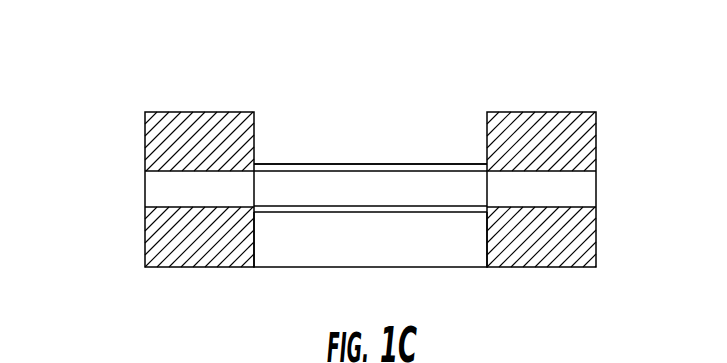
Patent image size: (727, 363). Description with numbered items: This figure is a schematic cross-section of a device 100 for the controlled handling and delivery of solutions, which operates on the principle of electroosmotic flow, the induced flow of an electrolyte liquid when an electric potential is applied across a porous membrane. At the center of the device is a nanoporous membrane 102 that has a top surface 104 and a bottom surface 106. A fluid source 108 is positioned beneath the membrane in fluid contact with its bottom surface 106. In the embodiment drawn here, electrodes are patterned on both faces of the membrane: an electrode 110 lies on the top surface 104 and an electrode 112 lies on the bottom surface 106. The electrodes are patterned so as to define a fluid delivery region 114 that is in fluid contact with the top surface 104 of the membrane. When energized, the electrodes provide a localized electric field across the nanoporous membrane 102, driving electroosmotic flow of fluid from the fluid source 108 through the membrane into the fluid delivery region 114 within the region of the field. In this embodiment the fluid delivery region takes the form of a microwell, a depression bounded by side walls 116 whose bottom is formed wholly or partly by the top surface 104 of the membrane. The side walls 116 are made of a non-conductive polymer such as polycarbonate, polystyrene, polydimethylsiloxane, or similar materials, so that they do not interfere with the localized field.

The device 100 is at (162, 70).
The nanoporous membrane 102 is at (583, 188).
The top surface 104 is at (177, 170).
The bottom surface 106 is at (188, 207).
The fluid source 108 is at (337, 248).
The electrode 110 is at (410, 164).
The electrode 112 is at (420, 212).
The fluid delivery region 114 is at (373, 140).
The side walls 116 is at (195, 123).